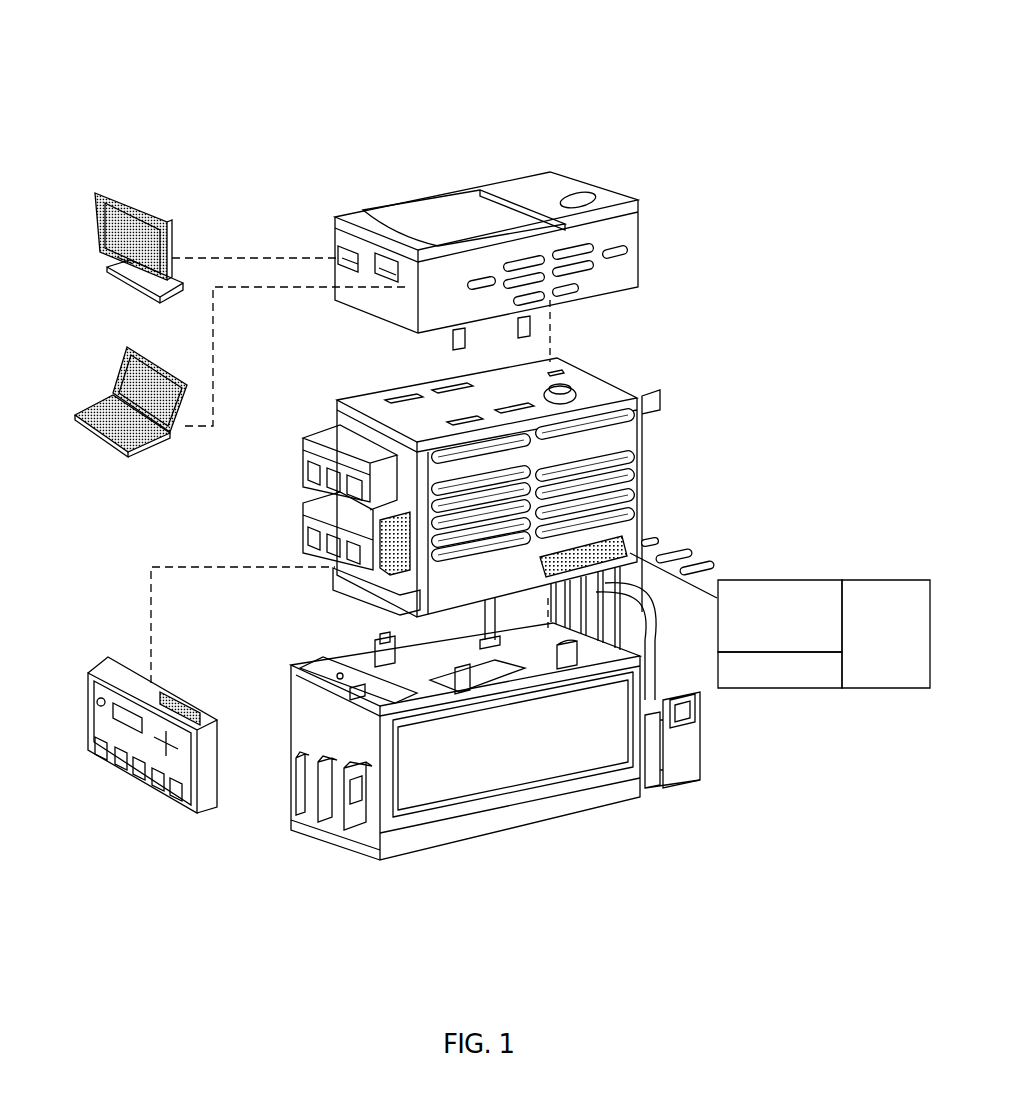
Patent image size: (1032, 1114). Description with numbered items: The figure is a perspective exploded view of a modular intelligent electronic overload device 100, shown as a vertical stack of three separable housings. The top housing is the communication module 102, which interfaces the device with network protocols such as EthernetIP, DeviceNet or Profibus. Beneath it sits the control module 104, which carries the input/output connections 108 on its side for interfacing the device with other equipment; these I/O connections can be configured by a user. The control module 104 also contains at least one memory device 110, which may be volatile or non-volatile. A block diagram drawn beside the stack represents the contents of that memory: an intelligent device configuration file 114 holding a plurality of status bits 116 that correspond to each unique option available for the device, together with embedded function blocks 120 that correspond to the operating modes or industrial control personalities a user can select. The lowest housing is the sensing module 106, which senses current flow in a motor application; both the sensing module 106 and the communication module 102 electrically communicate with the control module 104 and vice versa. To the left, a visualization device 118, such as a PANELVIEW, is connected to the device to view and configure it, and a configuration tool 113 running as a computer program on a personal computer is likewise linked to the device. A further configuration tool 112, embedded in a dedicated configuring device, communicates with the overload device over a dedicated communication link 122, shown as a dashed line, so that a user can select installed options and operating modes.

The modular intelligent electronic overload device 100 is at (508, 130).
The communication module 102 is at (408, 160).
The control module 104 is at (593, 387).
The sensing module 106 is at (593, 803).
The input/output connections 108 is at (300, 470).
The memory device 110 is at (620, 557).
The configuration tool 112 is at (185, 827).
The configuration tool 113 is at (120, 398).
The intelligent device configuration file 114 is at (792, 580).
The status bits 116 is at (793, 688).
The visualization device 118 is at (95, 200).
The function blocks 120 is at (880, 580).
The dedicated communication link 122 is at (203, 567).